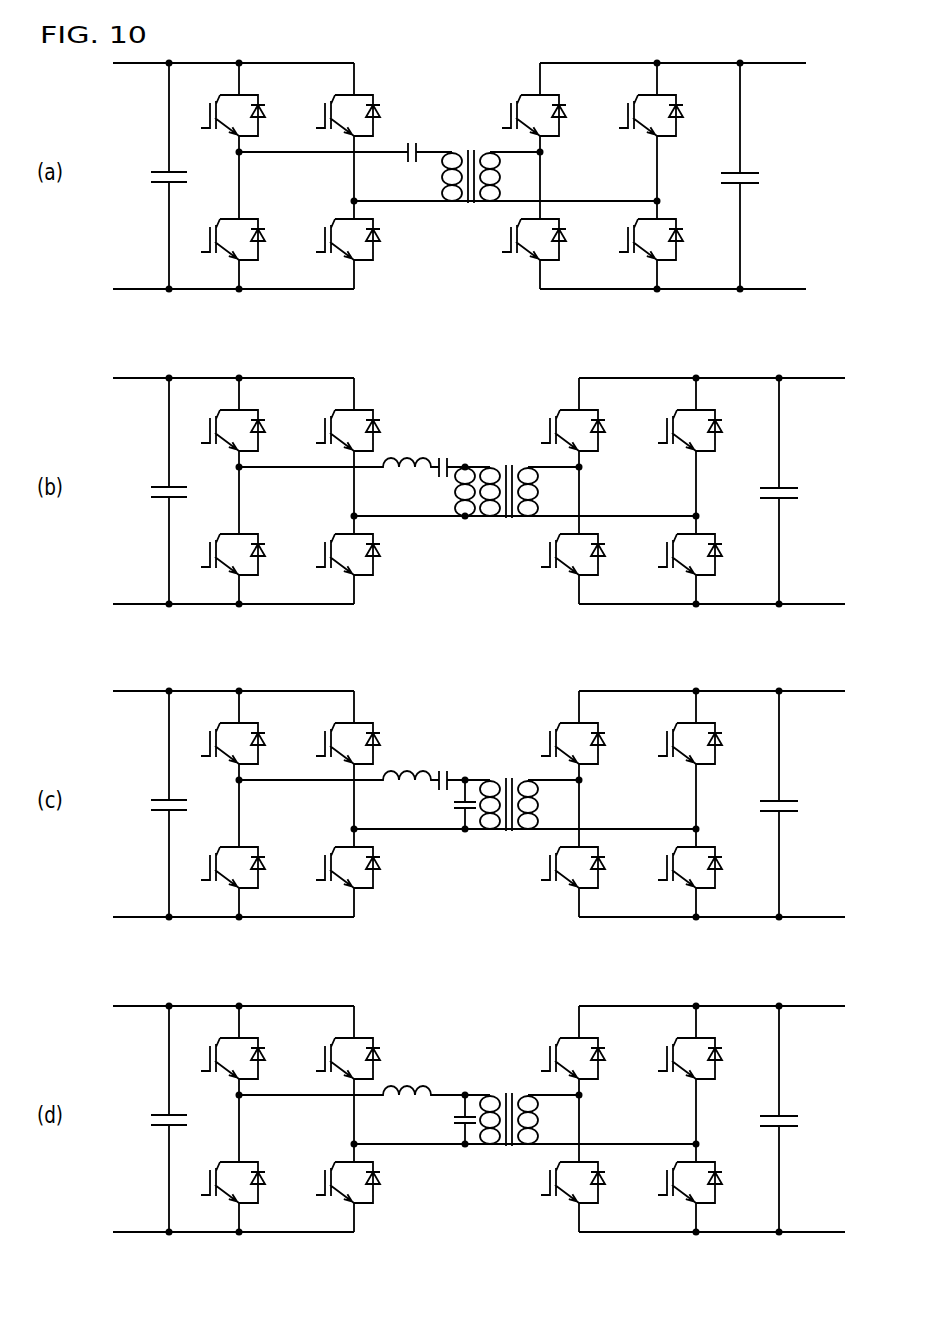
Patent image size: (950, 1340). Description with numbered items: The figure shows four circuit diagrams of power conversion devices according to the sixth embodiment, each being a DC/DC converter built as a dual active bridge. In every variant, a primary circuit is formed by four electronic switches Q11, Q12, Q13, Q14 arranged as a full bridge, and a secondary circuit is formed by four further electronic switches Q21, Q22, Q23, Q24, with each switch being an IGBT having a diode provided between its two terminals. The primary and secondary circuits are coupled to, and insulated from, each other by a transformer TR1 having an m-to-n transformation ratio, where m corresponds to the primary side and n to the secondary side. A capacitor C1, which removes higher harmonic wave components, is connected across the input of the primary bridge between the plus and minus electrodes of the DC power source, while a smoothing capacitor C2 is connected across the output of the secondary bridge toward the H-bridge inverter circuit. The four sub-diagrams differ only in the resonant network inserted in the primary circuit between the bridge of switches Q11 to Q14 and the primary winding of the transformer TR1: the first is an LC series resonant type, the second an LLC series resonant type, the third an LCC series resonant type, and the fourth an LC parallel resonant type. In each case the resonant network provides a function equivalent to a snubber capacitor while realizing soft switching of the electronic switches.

The electronic switch Q11 is at (230, 572).
The electronic switch Q12 is at (230, 724).
The electronic switch Q13 is at (345, 572).
The electronic switch Q14 is at (345, 724).
The electronic switch Q21 is at (550, 572).
The electronic switch Q22 is at (550, 724).
The electronic switch Q23 is at (667, 572).
The electronic switch Q24 is at (667, 724).
The capacitor C1 is at (153, 647).
The capacitor C2 is at (773, 647).
The transformer TR1 is at (490, 660).